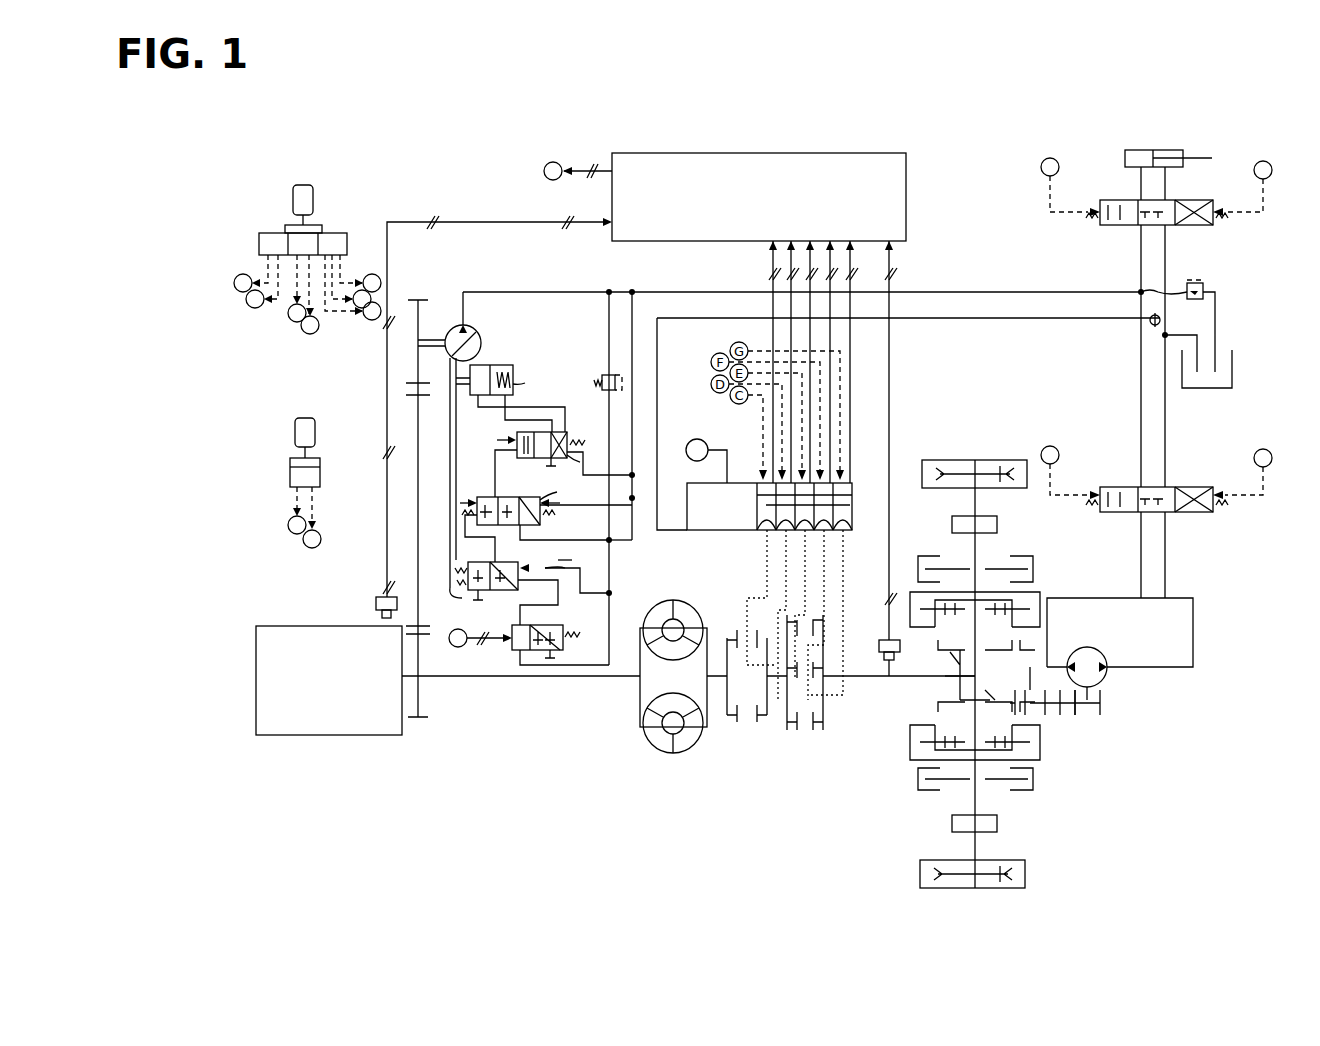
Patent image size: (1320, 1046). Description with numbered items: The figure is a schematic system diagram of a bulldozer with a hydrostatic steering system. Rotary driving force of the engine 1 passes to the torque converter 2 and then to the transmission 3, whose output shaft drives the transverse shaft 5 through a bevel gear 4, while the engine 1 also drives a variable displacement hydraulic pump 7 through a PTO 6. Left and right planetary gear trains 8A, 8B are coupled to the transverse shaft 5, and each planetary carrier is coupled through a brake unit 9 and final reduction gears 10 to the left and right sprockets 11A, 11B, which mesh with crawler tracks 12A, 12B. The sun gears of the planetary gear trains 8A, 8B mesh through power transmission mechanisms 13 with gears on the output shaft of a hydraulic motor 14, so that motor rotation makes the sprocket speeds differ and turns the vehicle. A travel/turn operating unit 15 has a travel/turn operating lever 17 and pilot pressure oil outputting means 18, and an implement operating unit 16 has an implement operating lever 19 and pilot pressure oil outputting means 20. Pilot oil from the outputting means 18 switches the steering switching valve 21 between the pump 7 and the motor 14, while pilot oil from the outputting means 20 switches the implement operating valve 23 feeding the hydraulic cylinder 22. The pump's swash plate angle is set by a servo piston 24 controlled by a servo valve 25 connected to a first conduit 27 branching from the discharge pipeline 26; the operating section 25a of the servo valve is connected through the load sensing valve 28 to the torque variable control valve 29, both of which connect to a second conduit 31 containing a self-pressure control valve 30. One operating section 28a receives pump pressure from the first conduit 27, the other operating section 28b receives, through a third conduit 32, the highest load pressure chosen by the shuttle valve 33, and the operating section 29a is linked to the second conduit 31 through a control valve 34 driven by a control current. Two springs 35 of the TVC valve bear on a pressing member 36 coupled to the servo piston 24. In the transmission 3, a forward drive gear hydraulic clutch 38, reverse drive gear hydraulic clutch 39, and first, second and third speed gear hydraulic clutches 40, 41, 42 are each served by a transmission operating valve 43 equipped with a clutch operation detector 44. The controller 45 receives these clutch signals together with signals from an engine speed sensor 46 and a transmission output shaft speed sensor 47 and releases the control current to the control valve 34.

The engine 1 is at (313, 735).
The torque converter 2 is at (658, 755).
The transmission 3 is at (840, 695).
The bevel gear 4 is at (950, 688).
The transverse shaft 5 is at (980, 668).
The PTO 6 is at (419, 728).
The variable displacement hydraulic pump 7 is at (462, 325).
The left planetary gear train 8A is at (1040, 756).
The right planetary gear train 8B is at (1040, 595).
The brake unit 9 is at (922, 556).
The final reduction gears 10 is at (997, 524).
The left sprocket 11A is at (1005, 880).
The right sprocket 11B is at (1000, 466).
The left crawler track 12A is at (920, 866).
The right crawler track 12B is at (930, 460).
The power transmission mechanism 13 is at (1056, 732).
The hydraulic motor 14 is at (1107, 675).
The travel/turn operating unit 15 is at (358, 202).
The implement operating unit 16 is at (338, 443).
The travel/turn operating lever 17 is at (293, 192).
The pilot pressure oil outputting means 18 is at (347, 238).
The implement operating lever 19 is at (295, 425).
The pilot pressure oil outputting means 20 is at (290, 472).
The steering switching valve 21 is at (1128, 487).
The hydraulic cylinder 22 is at (1178, 150).
The implement operating valve 23 is at (1115, 200).
The servo piston 24 is at (507, 365).
The servo valve 25 is at (560, 432).
The operating section of servo valve 25a is at (514, 436).
The discharge pipeline 26 is at (540, 292).
The first conduit 27 is at (632, 292).
The load sensing valve 28 is at (498, 497).
The operating section of LS valve 28a is at (560, 503).
The operating section of LS valve 28b is at (477, 498).
The torque variable control valve 29 is at (468, 575).
The operating section of TVC valve 29a is at (572, 556).
The self-pressure control valve 30 is at (602, 378).
The second conduit 31 is at (609, 292).
The third conduit 32 is at (657, 393).
The highest pressure selecting type shuttle valve 33 is at (1150, 325).
The control valve 34 is at (512, 648).
The springs 35 is at (455, 585).
The pressing member 36 is at (450, 420).
The forward drive gear hydraulic clutch 38 is at (737, 635).
The reverse drive gear hydraulic clutch 39 is at (737, 716).
The first speed gear hydraulic clutch 40 is at (820, 620).
The second speed gear hydraulic clutch 41 is at (818, 678).
The third speed gear hydraulic clutch 42 is at (816, 730).
The transmission operating valve 43 is at (748, 530).
The clutch operation detector 44 is at (850, 500).
The controller 45 is at (766, 204).
The engine speed sensor 46 is at (376, 600).
The transmission output shaft speed sensor 47 is at (879, 643).